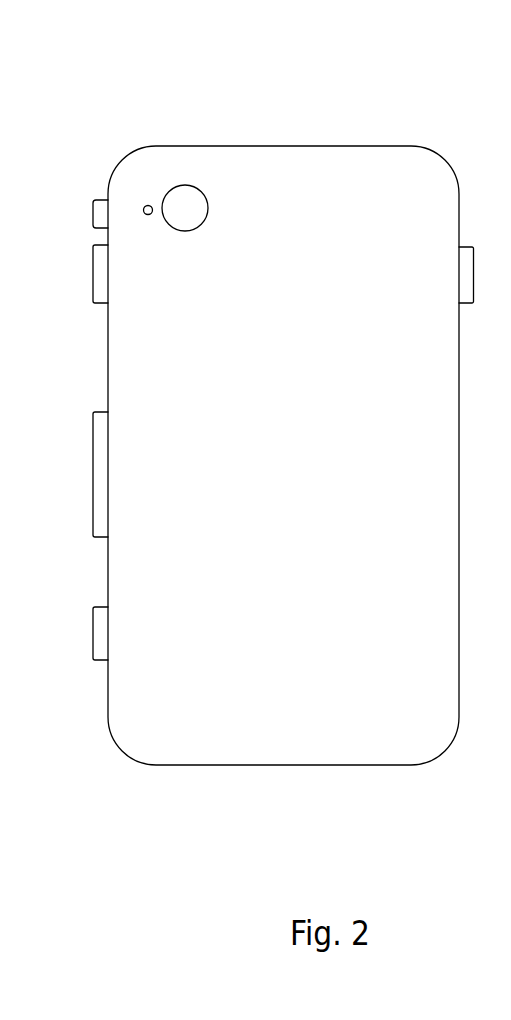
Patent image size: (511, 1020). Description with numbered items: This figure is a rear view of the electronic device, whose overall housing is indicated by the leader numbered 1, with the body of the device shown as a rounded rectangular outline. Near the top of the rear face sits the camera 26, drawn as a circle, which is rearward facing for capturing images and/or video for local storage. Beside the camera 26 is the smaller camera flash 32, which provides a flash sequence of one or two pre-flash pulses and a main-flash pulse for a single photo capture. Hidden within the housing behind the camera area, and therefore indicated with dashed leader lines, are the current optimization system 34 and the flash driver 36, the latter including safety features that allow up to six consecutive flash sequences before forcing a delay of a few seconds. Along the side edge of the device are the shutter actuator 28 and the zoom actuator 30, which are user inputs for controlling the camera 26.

The electronic device 1 is at (460, 82).
The camera 26 is at (197, 210).
The shutter actuator 28 is at (93, 633).
The zoom actuator 30 is at (93, 480).
The camera flash 32 is at (141, 208).
The current optimization system 34 is at (148, 178).
The flash driver 36 is at (192, 167).